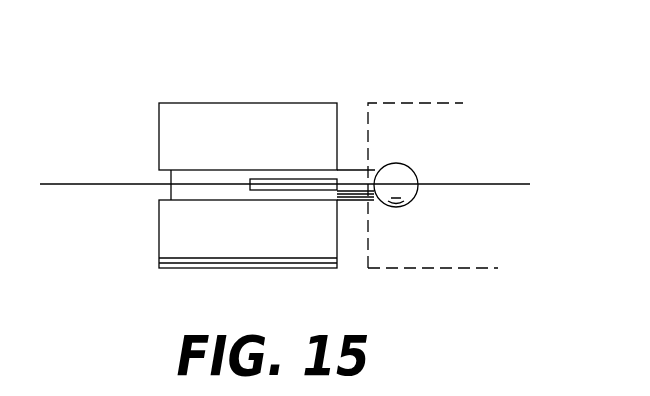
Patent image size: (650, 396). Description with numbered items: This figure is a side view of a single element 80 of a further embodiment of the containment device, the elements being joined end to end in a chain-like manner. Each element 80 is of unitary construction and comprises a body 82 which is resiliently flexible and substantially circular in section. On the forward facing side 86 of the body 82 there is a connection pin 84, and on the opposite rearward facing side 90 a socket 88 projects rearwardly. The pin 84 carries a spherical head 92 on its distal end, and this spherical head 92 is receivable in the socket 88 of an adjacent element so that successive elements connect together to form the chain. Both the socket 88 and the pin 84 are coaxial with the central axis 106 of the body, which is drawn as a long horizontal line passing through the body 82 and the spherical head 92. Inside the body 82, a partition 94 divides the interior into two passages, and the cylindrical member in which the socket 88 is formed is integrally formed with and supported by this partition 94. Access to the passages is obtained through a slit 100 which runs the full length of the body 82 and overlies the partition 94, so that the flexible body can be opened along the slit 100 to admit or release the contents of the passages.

The element 80 is at (202, 98).
The body 82 is at (243, 117).
The connection pin 84 is at (357, 158).
The forward facing side 86 is at (337, 250).
The socket 88 is at (168, 180).
The rearward facing side 90 is at (158, 243).
The spherical head 92 is at (410, 172).
The partition 94 is at (282, 200).
The slit 100 is at (207, 200).
The central axis 106 is at (485, 190).